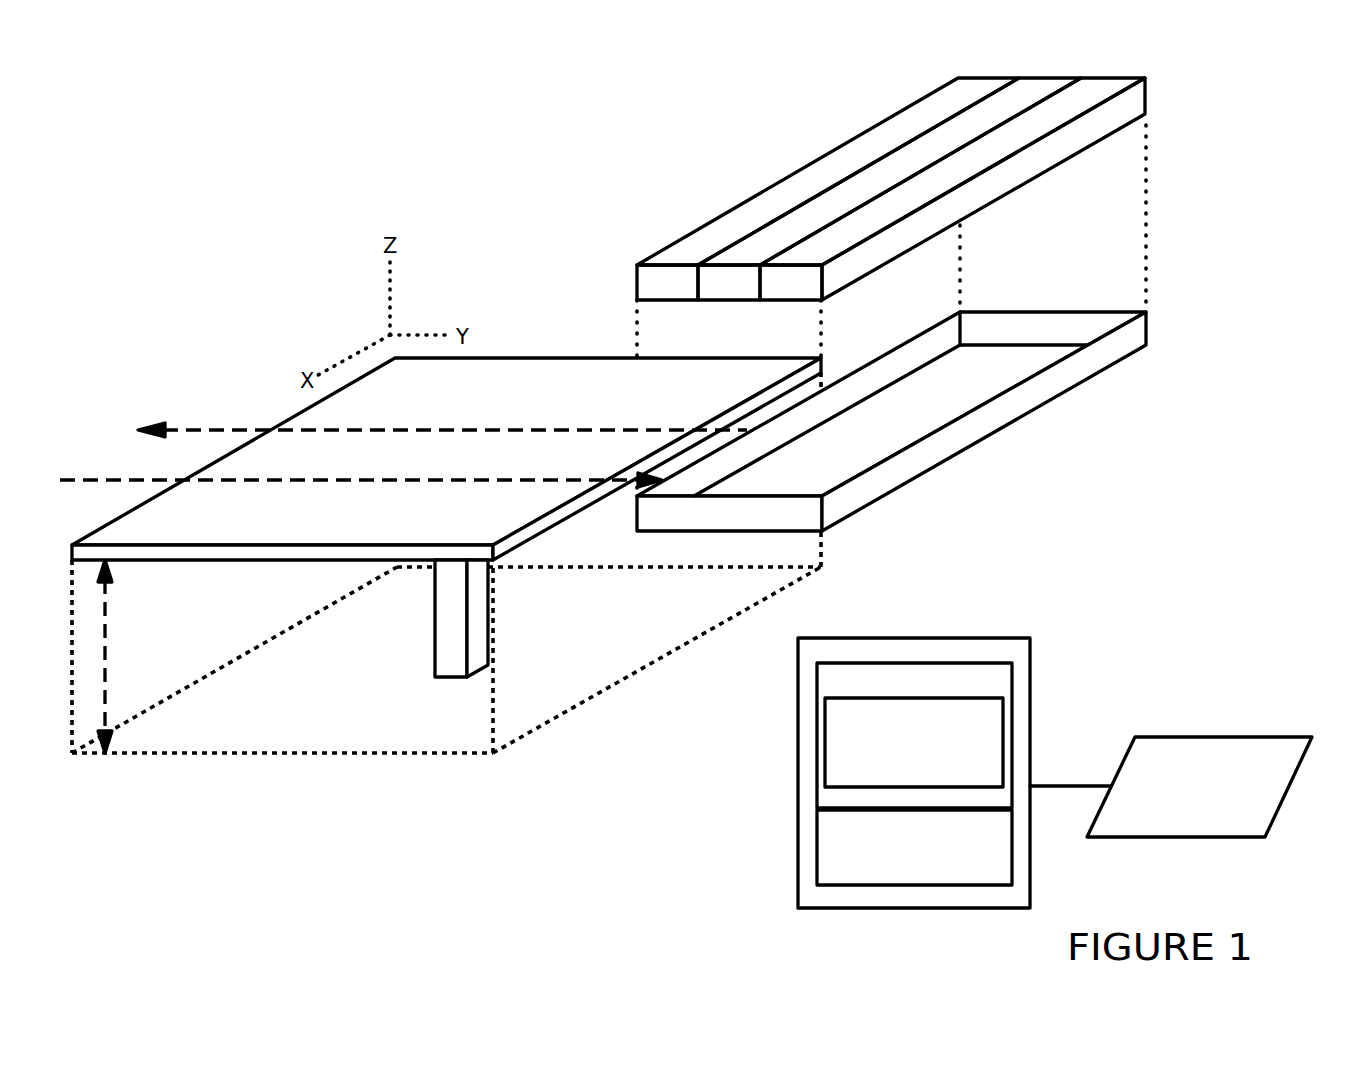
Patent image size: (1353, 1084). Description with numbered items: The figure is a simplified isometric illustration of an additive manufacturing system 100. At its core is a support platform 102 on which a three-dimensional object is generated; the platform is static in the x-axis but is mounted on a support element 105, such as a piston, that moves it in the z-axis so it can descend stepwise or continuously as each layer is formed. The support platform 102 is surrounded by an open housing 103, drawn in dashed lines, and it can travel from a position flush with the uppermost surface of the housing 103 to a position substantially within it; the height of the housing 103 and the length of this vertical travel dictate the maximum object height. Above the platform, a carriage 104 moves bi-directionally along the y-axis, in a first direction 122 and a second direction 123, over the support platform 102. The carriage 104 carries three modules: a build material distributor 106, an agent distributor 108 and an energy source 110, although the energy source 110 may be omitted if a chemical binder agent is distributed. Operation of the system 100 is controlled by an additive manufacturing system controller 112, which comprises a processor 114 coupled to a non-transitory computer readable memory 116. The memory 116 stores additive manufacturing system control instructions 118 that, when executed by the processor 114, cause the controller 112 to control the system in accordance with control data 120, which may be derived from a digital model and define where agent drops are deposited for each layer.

The additive manufacturing system 100 is at (208, 257).
The support platform 102 is at (512, 358).
The open housing 103 is at (235, 753).
The carriage 104 is at (1029, 312).
The support element 105 is at (435, 630).
The build material distributor 106 is at (975, 78).
The agent distributor 108 is at (1035, 78).
The energy source 110 is at (1097, 78).
The additive manufacturing system controller 112 is at (932, 755).
The processor 114 is at (817, 860).
The non-transitory computer readable memory 116 is at (882, 724).
The additive manufacturing system control instructions 118 is at (825, 762).
The control data 120 is at (1283, 798).
The first direction 122 is at (175, 430).
The second direction 123 is at (97, 480).